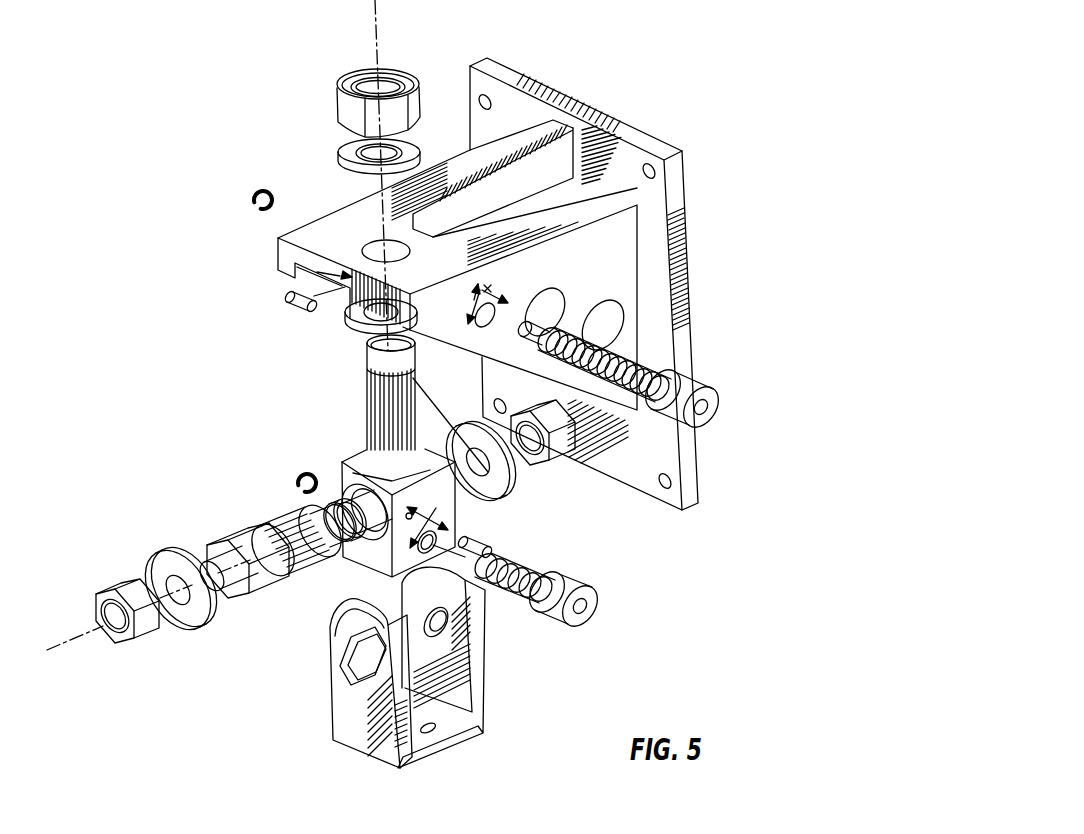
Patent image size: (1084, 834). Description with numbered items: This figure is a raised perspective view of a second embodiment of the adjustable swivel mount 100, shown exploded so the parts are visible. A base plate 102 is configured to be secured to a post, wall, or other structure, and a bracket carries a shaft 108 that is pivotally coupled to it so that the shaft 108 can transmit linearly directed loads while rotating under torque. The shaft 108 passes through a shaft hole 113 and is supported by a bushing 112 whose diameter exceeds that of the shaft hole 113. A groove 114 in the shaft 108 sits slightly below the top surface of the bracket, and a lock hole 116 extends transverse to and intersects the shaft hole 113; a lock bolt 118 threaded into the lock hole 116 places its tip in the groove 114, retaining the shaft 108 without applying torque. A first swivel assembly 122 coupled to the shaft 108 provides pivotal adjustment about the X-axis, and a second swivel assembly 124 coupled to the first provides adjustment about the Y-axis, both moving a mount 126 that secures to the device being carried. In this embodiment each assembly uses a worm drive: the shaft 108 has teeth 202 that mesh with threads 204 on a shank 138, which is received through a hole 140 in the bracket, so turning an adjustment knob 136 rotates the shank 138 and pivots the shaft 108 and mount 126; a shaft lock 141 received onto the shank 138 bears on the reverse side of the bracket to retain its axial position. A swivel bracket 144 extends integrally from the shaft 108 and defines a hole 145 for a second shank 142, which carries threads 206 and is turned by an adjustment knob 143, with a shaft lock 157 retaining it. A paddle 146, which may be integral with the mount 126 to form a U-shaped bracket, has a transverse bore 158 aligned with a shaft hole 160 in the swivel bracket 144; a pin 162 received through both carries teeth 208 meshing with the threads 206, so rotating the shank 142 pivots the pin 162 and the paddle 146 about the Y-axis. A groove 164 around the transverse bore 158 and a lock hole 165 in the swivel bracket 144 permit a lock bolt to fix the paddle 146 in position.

The adjustable swivel mount 100 is at (485, 256).
The base plate 102 is at (614, 285).
The shaft 108 is at (502, 480).
The bushing 112 is at (415, 106).
The shaft hole 113 is at (385, 258).
The groove 114 is at (333, 374).
The lock hole 116 is at (297, 263).
The lock bolt 118 is at (292, 308).
The first swivel assembly 122 is at (657, 349).
The second swivel assembly 124 is at (608, 610).
The mount 126 is at (405, 665).
The adjustment knob 136 is at (713, 406).
The shank 138 is at (660, 366).
The adjustment hole 140 is at (500, 322).
The shaft lock 141 is at (256, 189).
The shank 142 is at (552, 610).
The adjustment knob 143 is at (586, 646).
The swivel bracket 144 is at (364, 477).
The hole 145 is at (461, 556).
The paddle 146 is at (357, 733).
The shaft lock 157 is at (303, 488).
The transverse bore 158 is at (367, 657).
The shaft hole 160 is at (362, 532).
The pin 162 is at (260, 595).
The groove 164 is at (333, 537).
The lock hole 165 is at (411, 515).
The teeth 202 is at (691, 463).
The threads 204 is at (366, 425).
The threads 206 is at (530, 590).
The teeth 208 is at (280, 517).